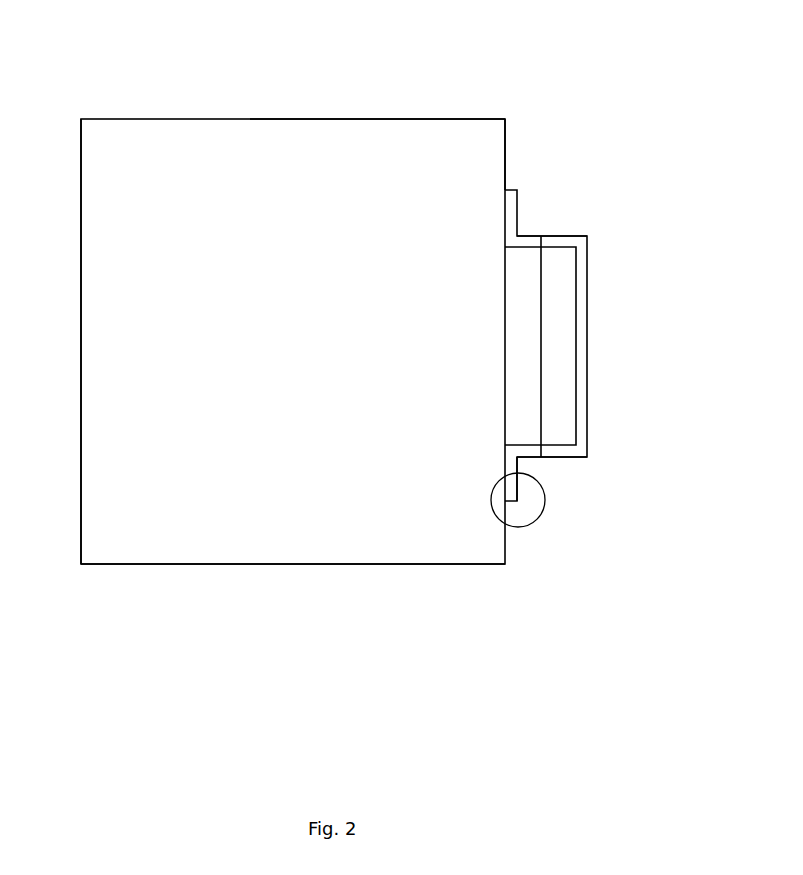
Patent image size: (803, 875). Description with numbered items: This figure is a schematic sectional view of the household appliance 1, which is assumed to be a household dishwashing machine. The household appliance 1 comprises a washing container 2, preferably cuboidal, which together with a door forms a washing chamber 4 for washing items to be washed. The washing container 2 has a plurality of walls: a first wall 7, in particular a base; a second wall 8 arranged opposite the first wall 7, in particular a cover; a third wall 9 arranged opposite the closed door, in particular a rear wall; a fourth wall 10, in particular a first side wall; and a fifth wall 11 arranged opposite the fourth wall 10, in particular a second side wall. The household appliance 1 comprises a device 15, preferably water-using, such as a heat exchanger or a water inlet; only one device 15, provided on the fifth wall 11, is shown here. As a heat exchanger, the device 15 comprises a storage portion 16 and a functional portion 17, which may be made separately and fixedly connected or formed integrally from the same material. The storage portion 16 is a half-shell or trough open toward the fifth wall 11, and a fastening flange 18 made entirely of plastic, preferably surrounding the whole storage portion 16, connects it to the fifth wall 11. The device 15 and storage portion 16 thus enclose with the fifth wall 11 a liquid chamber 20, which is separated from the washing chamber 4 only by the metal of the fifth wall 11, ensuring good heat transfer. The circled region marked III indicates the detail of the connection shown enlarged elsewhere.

The household appliance 1 is at (298, 70).
The washing container 2 is at (116, 118).
The washing chamber 4 is at (299, 353).
The first wall 7 is at (145, 565).
The second wall 8 is at (408, 118).
The third wall 9 is at (147, 407).
The fourth wall 10 is at (81, 265).
The fifth wall 11 is at (505, 150).
The device 15 is at (587, 288).
The storage portion 16 is at (530, 458).
The functional portion 17 is at (577, 458).
The fastening flange 18 is at (517, 200).
The liquid chamber 20 is at (536, 353).
The detail section III is at (520, 528).